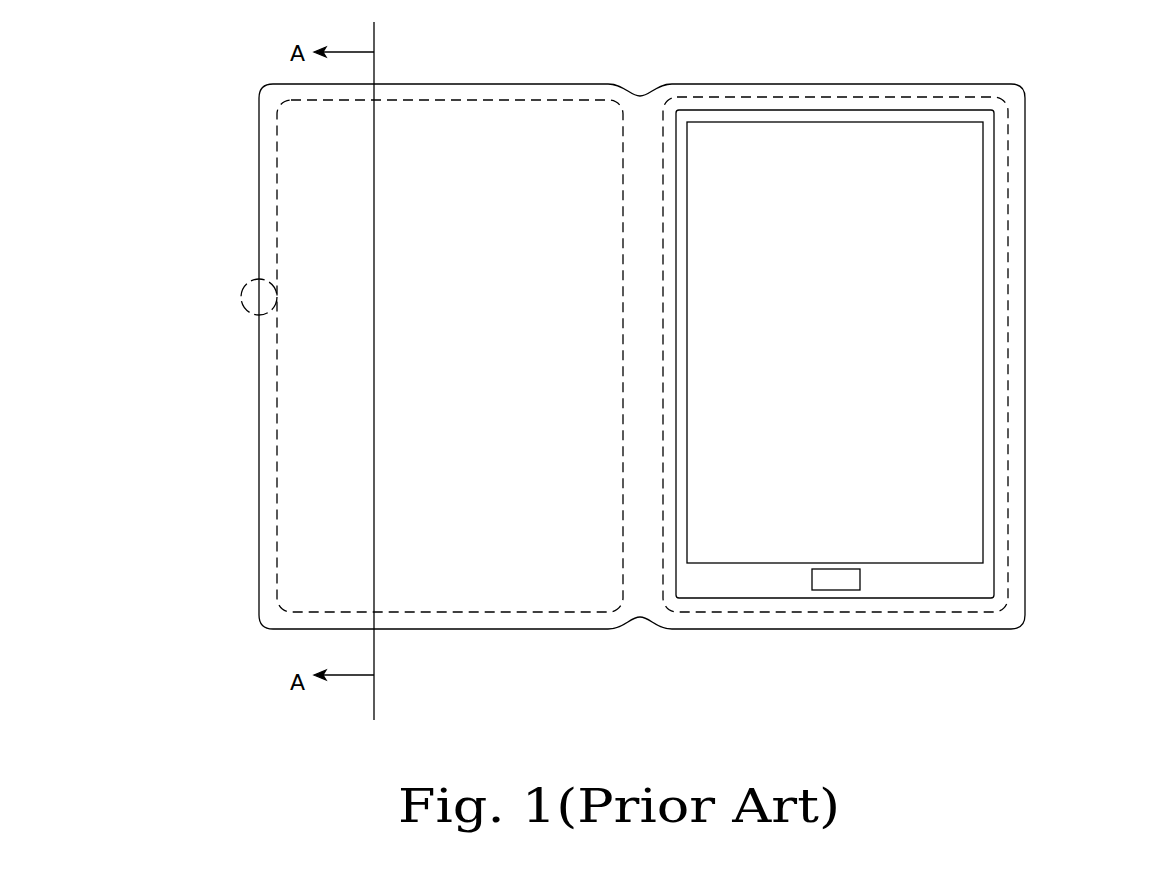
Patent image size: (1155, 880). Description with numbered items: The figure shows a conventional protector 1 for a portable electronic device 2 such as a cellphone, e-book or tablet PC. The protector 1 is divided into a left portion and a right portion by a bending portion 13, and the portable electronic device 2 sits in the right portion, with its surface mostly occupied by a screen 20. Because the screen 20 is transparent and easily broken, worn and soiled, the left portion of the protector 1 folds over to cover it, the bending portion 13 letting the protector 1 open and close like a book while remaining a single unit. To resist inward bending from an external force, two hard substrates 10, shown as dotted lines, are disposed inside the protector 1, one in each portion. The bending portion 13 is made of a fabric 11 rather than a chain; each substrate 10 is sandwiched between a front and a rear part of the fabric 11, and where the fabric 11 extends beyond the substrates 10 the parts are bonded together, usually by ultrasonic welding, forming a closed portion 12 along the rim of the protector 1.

The protector 1 is at (649, 388).
The portable electronic device 2 is at (975, 578).
The substrate 10 is at (277, 424).
The fabric 11 is at (268, 550).
The closed portion 12 is at (246, 287).
The bending portion 13 is at (643, 553).
The screen 20 is at (860, 355).